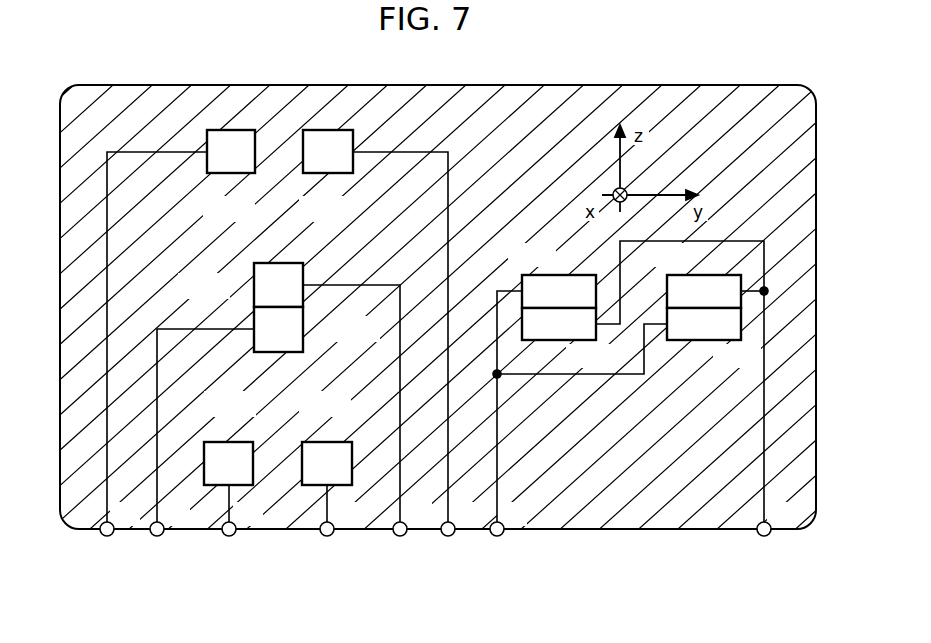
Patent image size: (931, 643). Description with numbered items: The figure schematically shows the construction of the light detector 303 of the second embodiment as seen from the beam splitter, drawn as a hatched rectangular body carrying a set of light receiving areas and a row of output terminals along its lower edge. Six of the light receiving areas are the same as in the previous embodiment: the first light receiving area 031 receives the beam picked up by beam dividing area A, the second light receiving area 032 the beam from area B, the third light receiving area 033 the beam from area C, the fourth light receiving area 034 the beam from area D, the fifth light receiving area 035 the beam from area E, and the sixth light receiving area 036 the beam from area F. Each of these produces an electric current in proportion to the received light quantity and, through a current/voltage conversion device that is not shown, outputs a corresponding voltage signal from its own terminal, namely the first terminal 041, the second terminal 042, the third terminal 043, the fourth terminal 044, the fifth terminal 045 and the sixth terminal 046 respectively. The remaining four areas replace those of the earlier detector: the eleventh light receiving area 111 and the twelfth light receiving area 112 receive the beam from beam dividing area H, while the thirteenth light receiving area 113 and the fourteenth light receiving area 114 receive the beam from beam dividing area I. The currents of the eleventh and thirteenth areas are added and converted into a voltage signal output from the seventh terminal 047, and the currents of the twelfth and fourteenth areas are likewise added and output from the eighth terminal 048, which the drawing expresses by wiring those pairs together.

The light detector 303 is at (719, 85).
The light receiving area S1 031 is at (328, 174).
The light receiving area S2 032 is at (327, 441).
The light receiving area S3 033 is at (229, 441).
The light receiving area S4 034 is at (231, 174).
The light receiving area S5 035 is at (304, 329).
The light receiving area S6 036 is at (253, 285).
The light receiving area S11 111 is at (560, 274).
The light receiving area S12 112 is at (560, 341).
The light receiving area S13 113 is at (705, 341).
The light receiving area S14 114 is at (700, 274).
The terminal P1 041 is at (448, 537).
The terminal P2 042 is at (327, 537).
The terminal P3 043 is at (229, 537).
The terminal P4 044 is at (107, 537).
The terminal P5 045 is at (157, 537).
The terminal P6 046 is at (400, 537).
The terminal P7 047 is at (497, 537).
The terminal P8 048 is at (764, 537).